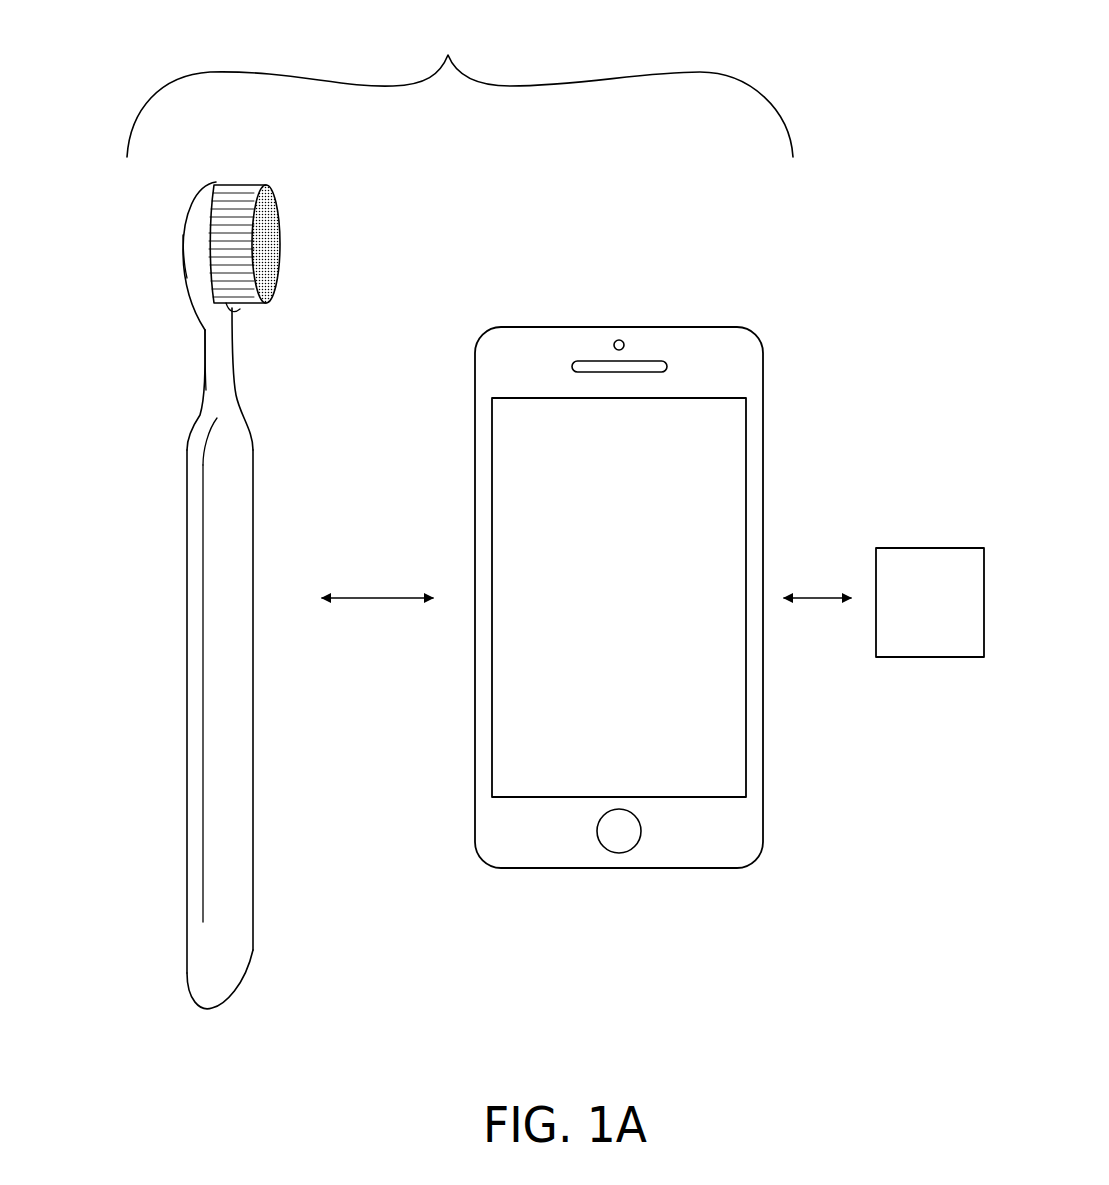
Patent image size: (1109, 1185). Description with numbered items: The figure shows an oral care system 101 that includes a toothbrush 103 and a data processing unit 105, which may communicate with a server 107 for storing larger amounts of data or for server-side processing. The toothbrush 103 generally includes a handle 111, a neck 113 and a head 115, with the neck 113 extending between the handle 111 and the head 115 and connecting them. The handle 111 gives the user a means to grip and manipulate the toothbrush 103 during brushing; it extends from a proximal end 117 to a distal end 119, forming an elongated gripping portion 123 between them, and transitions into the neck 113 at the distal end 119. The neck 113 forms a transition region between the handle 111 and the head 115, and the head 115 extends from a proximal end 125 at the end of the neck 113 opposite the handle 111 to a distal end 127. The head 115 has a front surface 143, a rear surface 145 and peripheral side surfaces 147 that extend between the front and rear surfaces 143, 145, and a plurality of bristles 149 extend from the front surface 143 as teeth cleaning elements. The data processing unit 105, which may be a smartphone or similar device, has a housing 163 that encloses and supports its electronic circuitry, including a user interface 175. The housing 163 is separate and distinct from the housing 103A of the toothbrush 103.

The oral care system 101 is at (460, 88).
The toothbrush 103 is at (112, 209).
The housing of the toothbrush 103A is at (237, 895).
The data processing unit 105 is at (674, 609).
The server 107 is at (909, 657).
The handle 111 is at (253, 657).
The neck 113 is at (237, 378).
The head 115 is at (185, 257).
The proximal end 117 is at (208, 995).
The distal end 119 is at (200, 435).
The elongated gripping portion 123 is at (215, 772).
The proximal end 125 is at (205, 322).
The distal end 127 is at (217, 180).
The front surface 143 is at (237, 310).
The rear surface 145 is at (168, 292).
The peripheral side surfaces 147 is at (197, 222).
The bristles 149 is at (273, 245).
The housing 163 is at (765, 372).
The user interface 175 is at (697, 533).